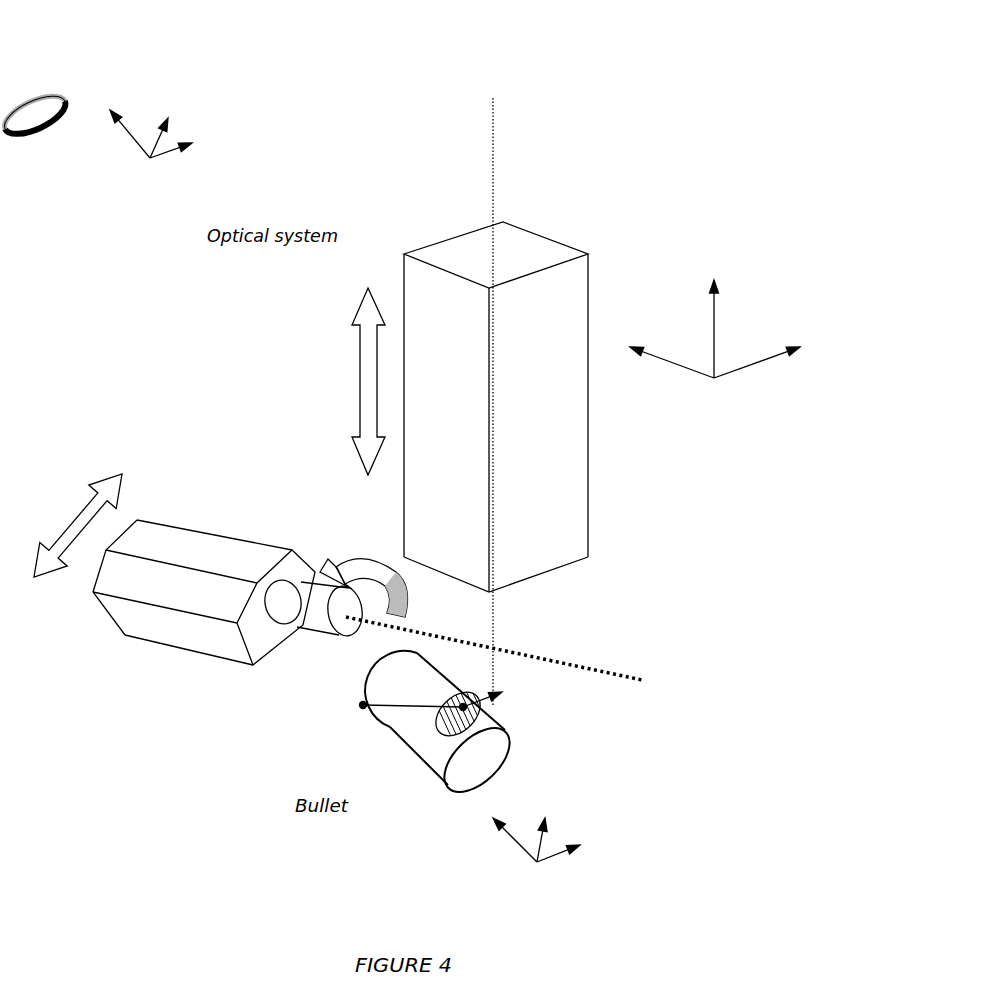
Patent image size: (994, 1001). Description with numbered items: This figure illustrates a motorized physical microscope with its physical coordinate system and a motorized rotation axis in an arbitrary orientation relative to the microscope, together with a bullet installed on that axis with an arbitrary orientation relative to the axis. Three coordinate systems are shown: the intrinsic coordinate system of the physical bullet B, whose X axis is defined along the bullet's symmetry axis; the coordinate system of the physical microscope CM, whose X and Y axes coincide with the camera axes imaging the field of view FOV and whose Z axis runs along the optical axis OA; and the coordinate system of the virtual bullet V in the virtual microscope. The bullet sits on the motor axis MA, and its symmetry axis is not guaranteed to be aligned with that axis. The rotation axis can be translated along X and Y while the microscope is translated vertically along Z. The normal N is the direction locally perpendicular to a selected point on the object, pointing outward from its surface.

The virtual bullet coordinate system V is at (111, 100).
The optical axis OA is at (579, 401).
The physical microscope coordinate system CM is at (746, 345).
The motor axis MA is at (642, 680).
The field of view FOV is at (330, 693).
The normal N is at (530, 721).
The physical bullet coordinate system B is at (616, 856).